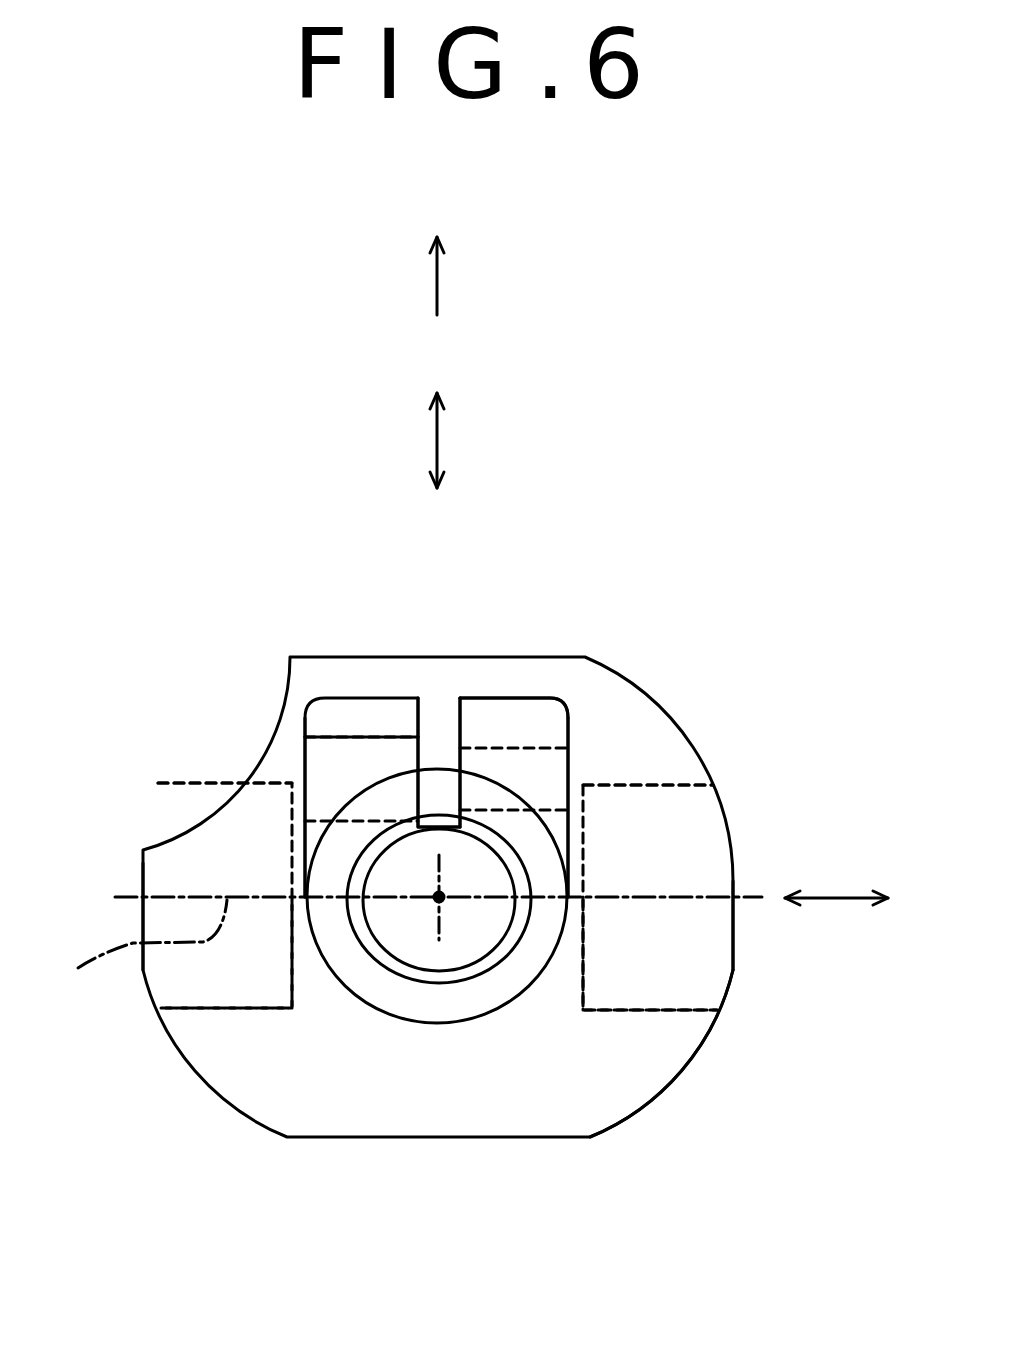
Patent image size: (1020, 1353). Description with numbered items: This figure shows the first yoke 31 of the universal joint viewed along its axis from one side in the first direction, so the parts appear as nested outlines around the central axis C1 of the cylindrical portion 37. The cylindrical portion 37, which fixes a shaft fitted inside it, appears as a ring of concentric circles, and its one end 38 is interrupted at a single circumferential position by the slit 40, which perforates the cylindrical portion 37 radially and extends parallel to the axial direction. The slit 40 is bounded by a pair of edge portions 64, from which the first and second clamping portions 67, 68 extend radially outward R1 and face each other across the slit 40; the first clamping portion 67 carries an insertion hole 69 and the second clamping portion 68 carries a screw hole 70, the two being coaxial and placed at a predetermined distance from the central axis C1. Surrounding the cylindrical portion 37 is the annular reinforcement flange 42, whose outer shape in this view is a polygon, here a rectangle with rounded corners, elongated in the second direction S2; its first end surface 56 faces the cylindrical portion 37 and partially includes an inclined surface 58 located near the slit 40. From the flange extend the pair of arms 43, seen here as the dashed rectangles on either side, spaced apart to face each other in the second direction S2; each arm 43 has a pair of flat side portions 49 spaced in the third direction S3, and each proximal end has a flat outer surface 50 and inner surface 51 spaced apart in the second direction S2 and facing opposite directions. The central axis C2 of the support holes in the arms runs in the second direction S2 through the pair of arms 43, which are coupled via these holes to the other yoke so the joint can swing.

The first yoke 31 is at (650, 663).
The cylindrical portion 37 is at (397, 1013).
The one end 38 is at (462, 1008).
The slit 40 is at (457, 780).
The reinforcement flange 42 is at (645, 1110).
The arm 43 is at (198, 782).
The side portion 49 is at (235, 783).
The outer surface 50 is at (143, 905).
The inner surface 51 is at (293, 985).
The first end surface 56 is at (552, 690).
The inclined surface 58 is at (445, 703).
The edge portion 64 is at (475, 797).
The first clamping portion 67 is at (360, 700).
The second clamping portion 68 is at (530, 695).
The insertion hole 69 is at (320, 745).
The screw hole 70 is at (575, 757).
The central axis C1 is at (439, 897).
The central axis C2 is at (121, 950).
The radially outward R1 is at (437, 292).
The second direction S2 is at (833, 897).
The third direction S3 is at (437, 440).